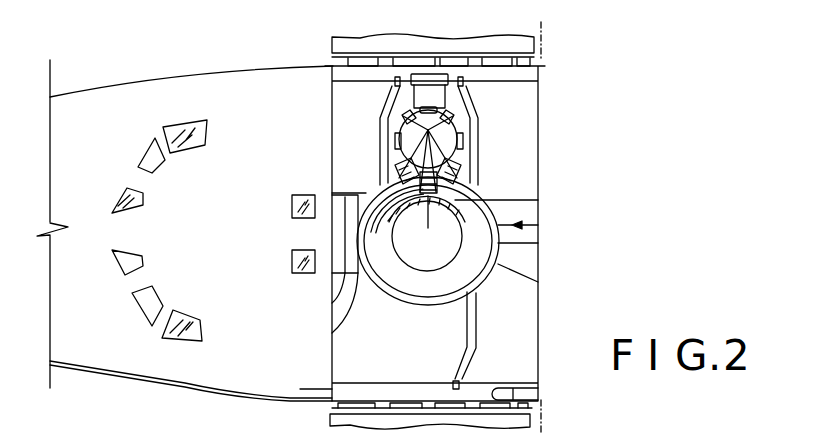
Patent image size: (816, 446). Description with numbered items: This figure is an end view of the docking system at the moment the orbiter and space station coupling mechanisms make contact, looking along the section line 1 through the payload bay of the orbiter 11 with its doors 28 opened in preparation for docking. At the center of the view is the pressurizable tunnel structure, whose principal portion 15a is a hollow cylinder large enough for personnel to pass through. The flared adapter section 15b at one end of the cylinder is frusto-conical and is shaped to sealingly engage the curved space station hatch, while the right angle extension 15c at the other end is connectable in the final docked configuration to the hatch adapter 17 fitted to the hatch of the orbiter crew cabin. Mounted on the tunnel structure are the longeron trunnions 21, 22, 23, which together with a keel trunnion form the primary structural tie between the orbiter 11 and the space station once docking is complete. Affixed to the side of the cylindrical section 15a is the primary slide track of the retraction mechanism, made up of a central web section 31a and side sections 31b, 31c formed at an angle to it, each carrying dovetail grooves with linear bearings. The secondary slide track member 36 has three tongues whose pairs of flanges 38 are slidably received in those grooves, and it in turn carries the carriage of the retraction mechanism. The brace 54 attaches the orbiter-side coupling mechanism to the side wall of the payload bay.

The section line 1- 1 is at (545, 22).
The orbiter 11 is at (178, 72).
The principal portion 15a is at (538, 225).
The flared adapter section 15b is at (538, 283).
The right angle extension 15c is at (340, 327).
The hatch adapter 17 is at (343, 278).
The longeron trunnion 21 is at (465, 79).
The longeron trunnion 22 is at (453, 382).
The longeron trunnion 23 is at (395, 78).
The doors 28 is at (338, 44).
The central web section 31a is at (427, 236).
The side section 31b is at (538, 200).
The side section 31c is at (385, 193).
The secondary slide track member 36 is at (405, 158).
The flanges 38 is at (397, 175).
The brace 54 is at (430, 93).